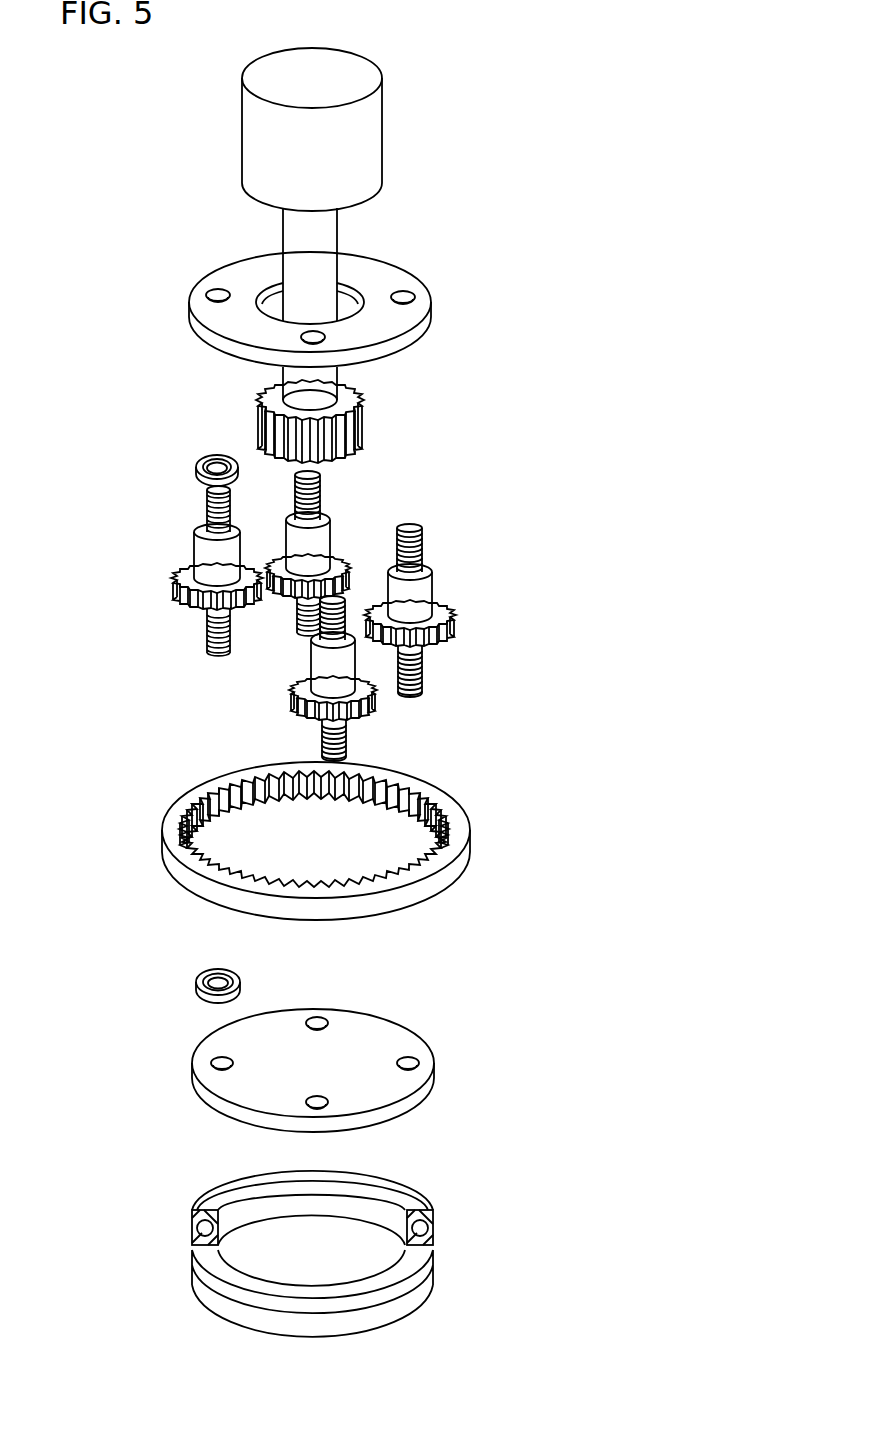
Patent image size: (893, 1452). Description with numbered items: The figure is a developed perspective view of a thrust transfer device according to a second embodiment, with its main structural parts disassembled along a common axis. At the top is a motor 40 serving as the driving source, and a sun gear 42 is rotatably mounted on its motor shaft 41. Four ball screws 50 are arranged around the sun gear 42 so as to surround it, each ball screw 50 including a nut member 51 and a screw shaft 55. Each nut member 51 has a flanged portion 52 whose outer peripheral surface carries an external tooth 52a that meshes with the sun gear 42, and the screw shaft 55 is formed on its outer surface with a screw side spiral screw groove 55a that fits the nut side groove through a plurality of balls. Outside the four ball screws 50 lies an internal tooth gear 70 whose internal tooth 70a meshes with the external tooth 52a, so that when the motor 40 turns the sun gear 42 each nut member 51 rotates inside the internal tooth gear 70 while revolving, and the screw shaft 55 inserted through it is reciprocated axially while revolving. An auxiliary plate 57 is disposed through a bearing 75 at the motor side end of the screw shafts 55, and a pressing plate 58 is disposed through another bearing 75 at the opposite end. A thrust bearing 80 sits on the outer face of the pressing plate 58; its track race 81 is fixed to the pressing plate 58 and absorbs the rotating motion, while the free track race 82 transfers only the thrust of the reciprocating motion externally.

The motor 40 is at (372, 152).
The motor shaft 41 is at (338, 236).
The sun gear 42 is at (362, 425).
The ball screw 50 is at (312, 612).
The nut member 51 is at (198, 548).
The flanged portion 52 is at (320, 623).
The external tooth 52a is at (173, 600).
The screw shaft 55 is at (213, 656).
The screw side spiral screw groove 55a is at (207, 505).
The auxiliary plate 57 is at (190, 297).
The pressing plate 58 is at (192, 1083).
The internal tooth gear 70 is at (305, 841).
The internal tooth 70a is at (398, 816).
The bearing 75 is at (197, 463).
The thrust bearing 80 is at (262, 1254).
The track race 81 is at (208, 1200).
The track race 82 is at (195, 1237).